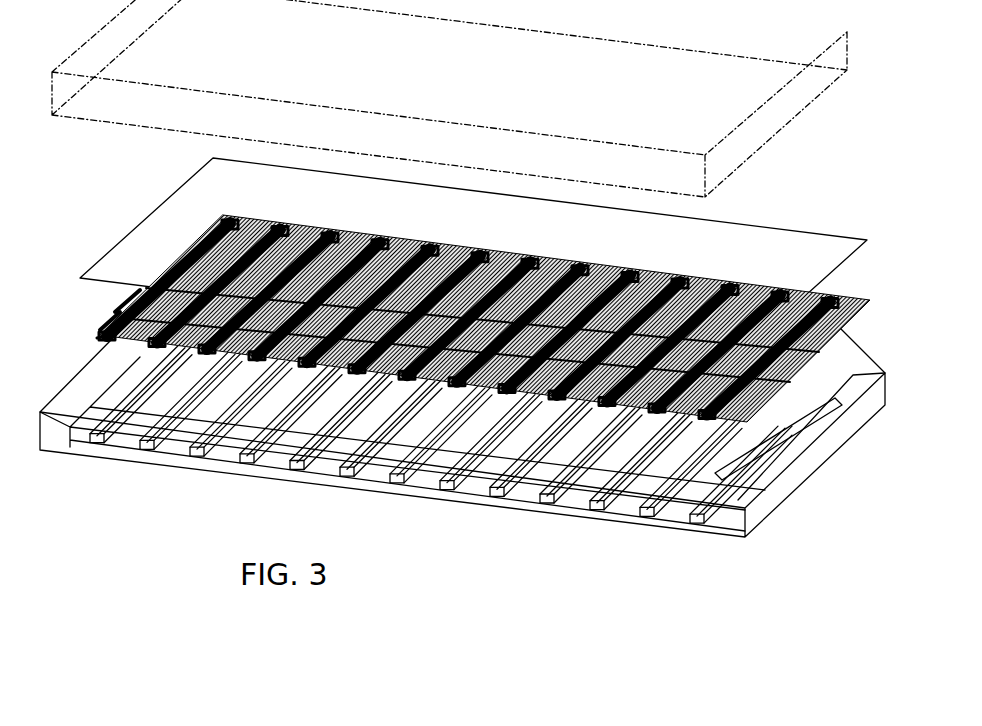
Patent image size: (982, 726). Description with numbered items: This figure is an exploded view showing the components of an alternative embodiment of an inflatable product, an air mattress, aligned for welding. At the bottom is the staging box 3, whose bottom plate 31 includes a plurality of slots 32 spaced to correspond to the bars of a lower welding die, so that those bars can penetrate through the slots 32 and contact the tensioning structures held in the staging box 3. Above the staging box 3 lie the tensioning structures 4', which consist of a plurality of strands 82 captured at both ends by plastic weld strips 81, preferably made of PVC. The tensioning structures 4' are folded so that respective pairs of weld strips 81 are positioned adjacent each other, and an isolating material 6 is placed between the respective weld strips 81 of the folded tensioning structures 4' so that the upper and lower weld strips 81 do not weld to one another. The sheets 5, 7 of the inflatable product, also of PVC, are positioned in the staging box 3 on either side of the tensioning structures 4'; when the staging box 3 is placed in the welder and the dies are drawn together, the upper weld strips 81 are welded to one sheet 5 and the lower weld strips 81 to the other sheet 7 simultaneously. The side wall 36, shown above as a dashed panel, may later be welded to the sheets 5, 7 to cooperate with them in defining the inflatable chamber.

The side wall 36 is at (718, 147).
The upper sheet 5 is at (805, 243).
The tensioning structures 4' is at (506, 318).
The lower sheet 7 is at (830, 347).
The strands 82 is at (115, 318).
The isolating material 6 is at (100, 330).
The weld strips 81 is at (97, 338).
The staging box 3 is at (860, 418).
The bottom plate 31 is at (675, 513).
The slots 32 is at (697, 520).